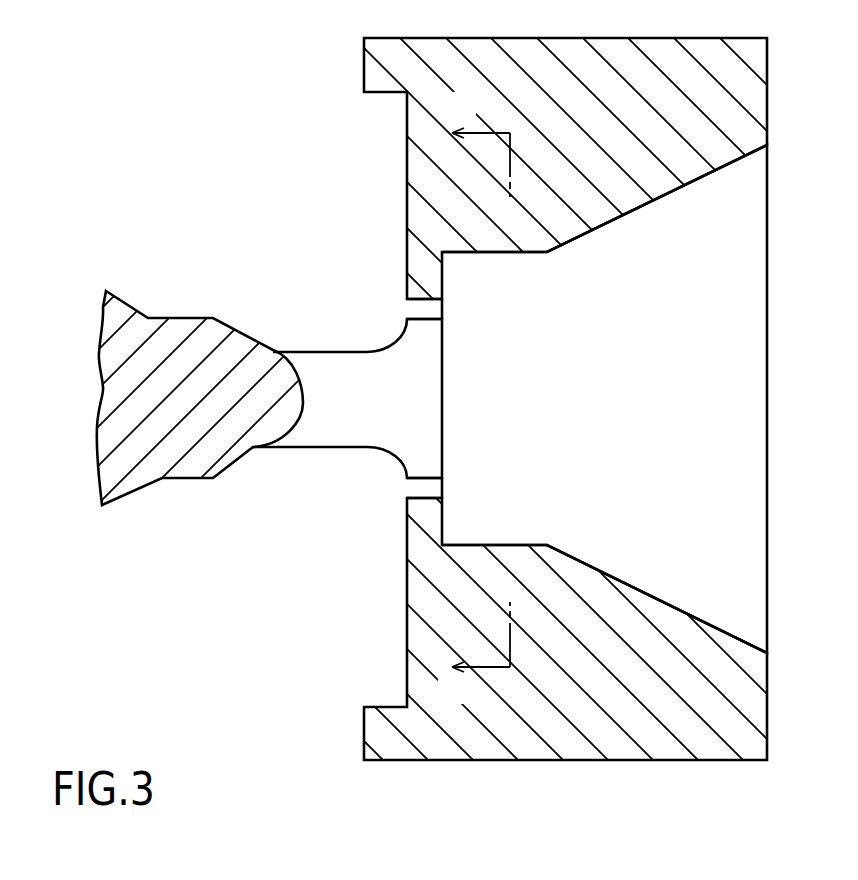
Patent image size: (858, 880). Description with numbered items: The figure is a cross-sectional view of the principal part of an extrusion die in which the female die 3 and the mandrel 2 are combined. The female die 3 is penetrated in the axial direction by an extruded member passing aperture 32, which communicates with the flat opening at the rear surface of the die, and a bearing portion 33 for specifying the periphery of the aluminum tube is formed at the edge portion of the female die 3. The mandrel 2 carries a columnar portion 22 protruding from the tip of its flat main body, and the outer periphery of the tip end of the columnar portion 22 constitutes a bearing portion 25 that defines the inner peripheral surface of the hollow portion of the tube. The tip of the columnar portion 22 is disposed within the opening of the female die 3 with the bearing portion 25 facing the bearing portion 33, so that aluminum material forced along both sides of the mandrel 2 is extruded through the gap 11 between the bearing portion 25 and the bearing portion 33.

The mandrel 2 is at (160, 458).
The female die 3 is at (710, 109).
The gap 11 is at (413, 310).
The columnar portion 22 is at (325, 372).
The bearing portion 25 is at (428, 317).
The extruded member passing aperture 32 is at (692, 399).
The bearing portion 33 is at (423, 302).